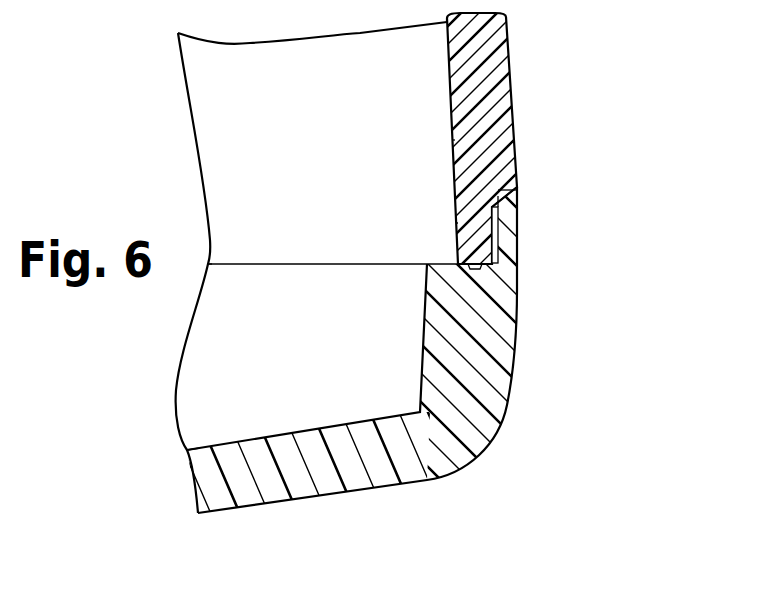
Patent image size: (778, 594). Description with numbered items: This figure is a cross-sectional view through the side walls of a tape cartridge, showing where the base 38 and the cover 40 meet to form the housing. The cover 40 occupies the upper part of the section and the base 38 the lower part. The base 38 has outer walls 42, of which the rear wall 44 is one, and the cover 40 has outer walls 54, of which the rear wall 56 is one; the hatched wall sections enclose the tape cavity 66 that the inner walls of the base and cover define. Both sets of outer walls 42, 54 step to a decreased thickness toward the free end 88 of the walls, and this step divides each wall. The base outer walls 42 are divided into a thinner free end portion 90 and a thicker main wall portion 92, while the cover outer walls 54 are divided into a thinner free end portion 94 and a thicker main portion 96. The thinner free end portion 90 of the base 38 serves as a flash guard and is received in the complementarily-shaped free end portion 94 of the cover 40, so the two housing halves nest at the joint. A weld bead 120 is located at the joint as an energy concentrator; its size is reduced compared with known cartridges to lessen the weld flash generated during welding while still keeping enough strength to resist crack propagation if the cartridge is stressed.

The base 38 is at (444, 350).
The cover 40 is at (476, 150).
The outer walls 42 is at (308, 328).
The rear wall 44 is at (514, 362).
The outer walls 54 is at (280, 127).
The rear wall 56 is at (517, 148).
The tape cavity 66 is at (227, 447).
The free end 88 is at (508, 203).
The free end portion 90 is at (508, 225).
The main wall portion 92 is at (505, 285).
The free end portion 94 is at (467, 223).
The main portion 96 is at (465, 140).
The weld beads 120 is at (470, 268).